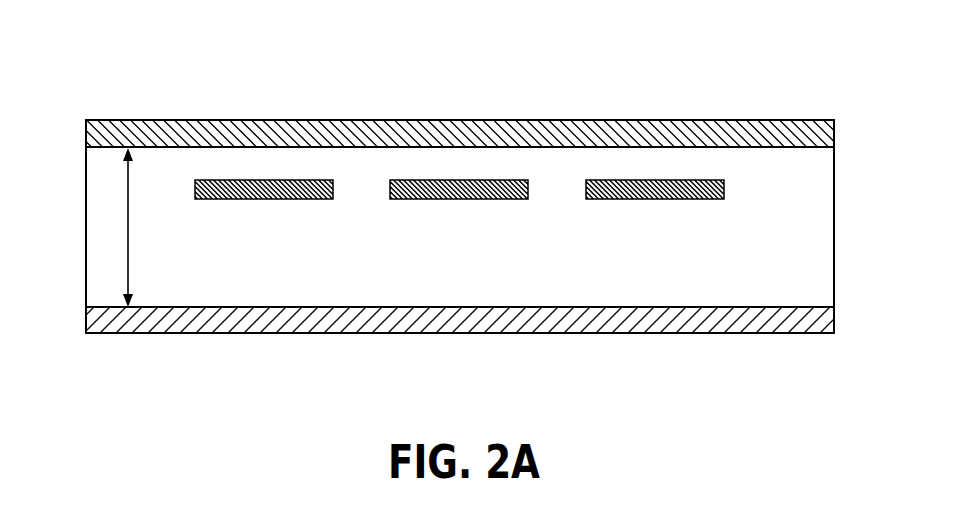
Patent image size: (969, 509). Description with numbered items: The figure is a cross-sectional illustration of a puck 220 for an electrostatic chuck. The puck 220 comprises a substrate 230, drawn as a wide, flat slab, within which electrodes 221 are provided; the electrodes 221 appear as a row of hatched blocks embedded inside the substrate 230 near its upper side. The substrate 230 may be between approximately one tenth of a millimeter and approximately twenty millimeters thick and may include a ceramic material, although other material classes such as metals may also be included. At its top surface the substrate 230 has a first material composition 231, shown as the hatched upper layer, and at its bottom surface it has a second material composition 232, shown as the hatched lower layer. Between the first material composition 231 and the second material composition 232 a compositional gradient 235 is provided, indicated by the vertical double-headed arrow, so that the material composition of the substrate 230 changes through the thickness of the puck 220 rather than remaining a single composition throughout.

The puck 220 is at (758, 58).
The substrate 230 is at (792, 285).
The first material composition 231 is at (350, 130).
The second material composition 232 is at (205, 320).
The electrodes 221 is at (463, 187).
The compositional gradient 235 is at (128, 245).